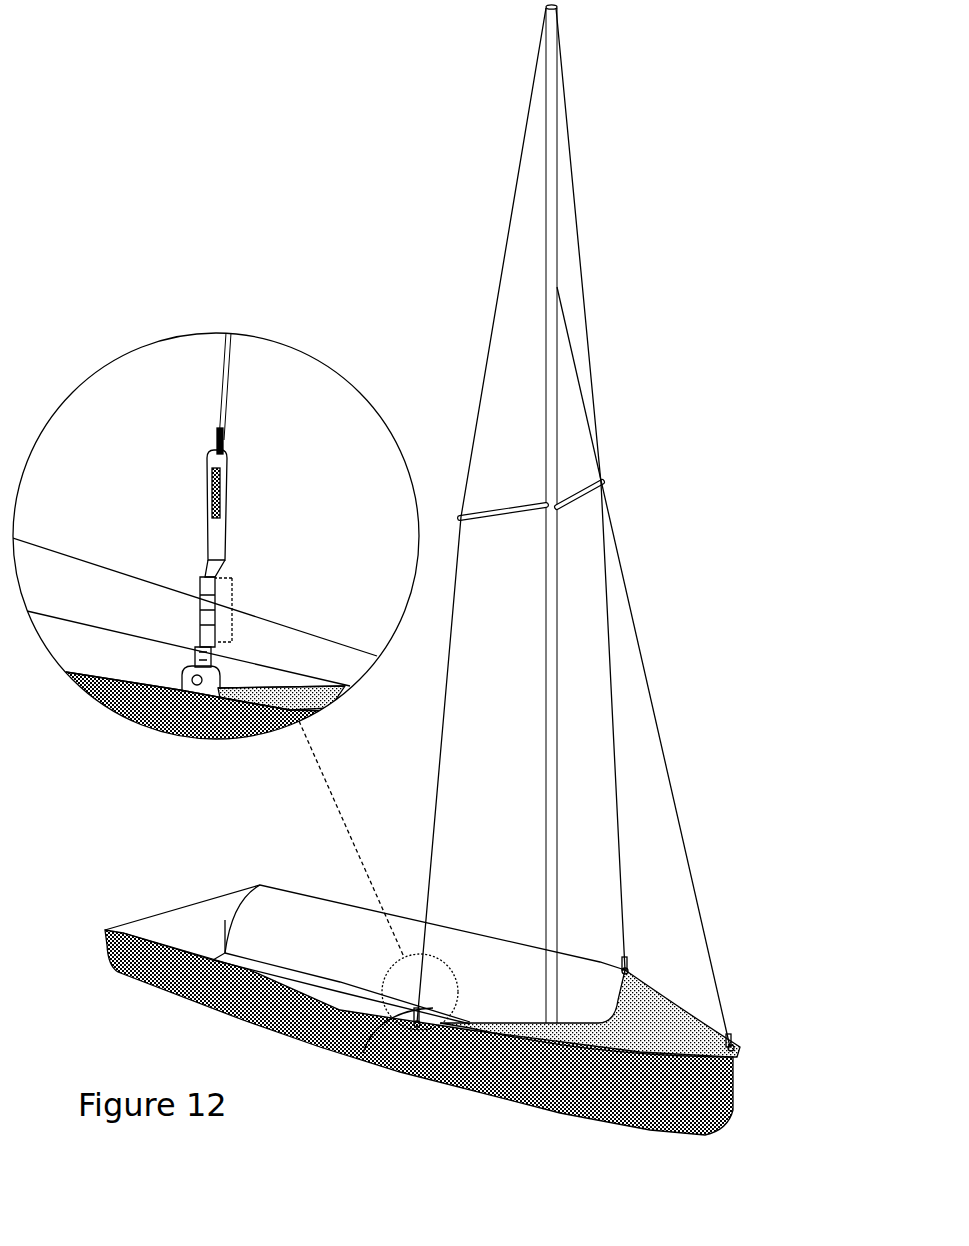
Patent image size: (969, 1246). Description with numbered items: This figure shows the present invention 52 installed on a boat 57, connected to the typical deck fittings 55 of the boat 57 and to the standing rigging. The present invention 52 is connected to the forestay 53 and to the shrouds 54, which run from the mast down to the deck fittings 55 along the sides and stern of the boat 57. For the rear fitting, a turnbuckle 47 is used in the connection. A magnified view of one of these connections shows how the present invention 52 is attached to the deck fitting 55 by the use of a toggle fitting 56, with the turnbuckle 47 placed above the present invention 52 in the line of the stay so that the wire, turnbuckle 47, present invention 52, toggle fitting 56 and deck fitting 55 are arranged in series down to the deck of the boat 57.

The turnbuckle 47 is at (218, 512).
The present invention 52 is at (624, 946).
The forestay 53 is at (642, 664).
The shrouds 54 is at (445, 712).
The deck fitting 55 is at (632, 968).
The toggle fitting 56 is at (190, 662).
The boat 57 is at (495, 1097).